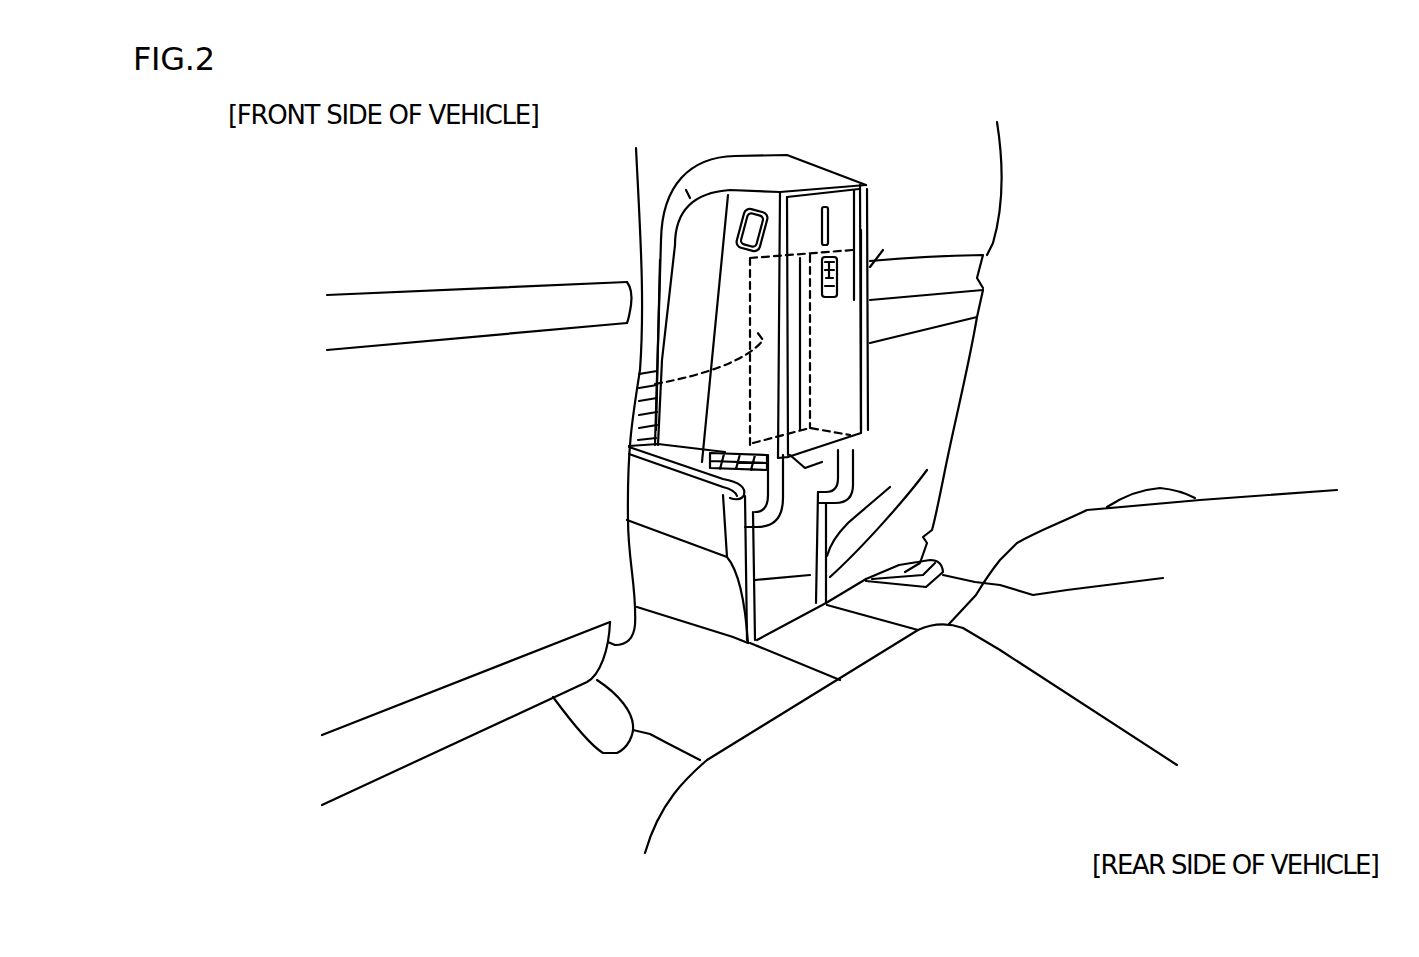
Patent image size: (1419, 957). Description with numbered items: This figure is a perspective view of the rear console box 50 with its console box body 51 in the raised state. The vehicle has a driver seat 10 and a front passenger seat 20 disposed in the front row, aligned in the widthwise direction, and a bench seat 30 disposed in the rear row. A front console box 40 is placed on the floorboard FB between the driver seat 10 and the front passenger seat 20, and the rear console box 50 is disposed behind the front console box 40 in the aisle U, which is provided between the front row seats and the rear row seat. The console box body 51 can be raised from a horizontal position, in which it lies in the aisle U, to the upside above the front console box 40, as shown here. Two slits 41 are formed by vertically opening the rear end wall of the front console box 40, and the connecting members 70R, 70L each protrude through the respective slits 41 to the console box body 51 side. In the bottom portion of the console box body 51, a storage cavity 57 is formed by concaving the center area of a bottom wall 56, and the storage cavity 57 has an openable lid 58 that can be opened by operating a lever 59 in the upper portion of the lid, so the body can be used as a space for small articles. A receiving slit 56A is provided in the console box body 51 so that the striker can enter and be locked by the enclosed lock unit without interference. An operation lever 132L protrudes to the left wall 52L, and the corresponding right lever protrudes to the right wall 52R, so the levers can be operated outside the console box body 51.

The driver seat 10 is at (970, 213).
The front passenger seat 20 is at (400, 652).
The bench seat 30 is at (1050, 717).
The front console box 40 is at (657, 547).
The slits 41 is at (890, 487).
The rear console box 50 is at (761, 248).
The console box body 51 is at (720, 148).
The left wall 52L is at (693, 260).
The right wall 52R is at (870, 228).
The bottom wall 56 is at (757, 208).
The receiving slit 56A is at (854, 190).
The storage cavity 57 is at (655, 384).
The openable lid 58 is at (835, 335).
The lever 59 is at (883, 250).
The connecting member 70L is at (768, 512).
The connecting member 70R is at (826, 527).
The operation lever 132L is at (686, 190).
The aisle U is at (823, 648).
The floorboard FB is at (597, 807).